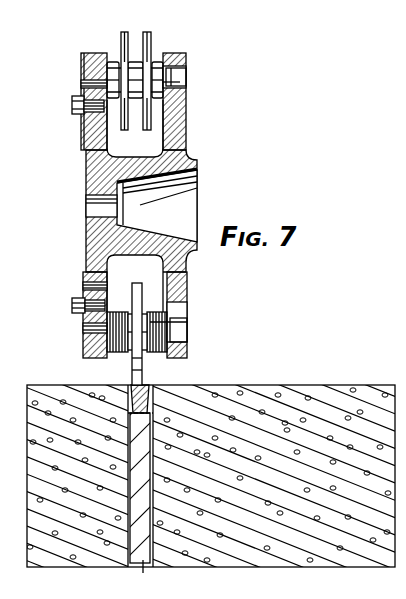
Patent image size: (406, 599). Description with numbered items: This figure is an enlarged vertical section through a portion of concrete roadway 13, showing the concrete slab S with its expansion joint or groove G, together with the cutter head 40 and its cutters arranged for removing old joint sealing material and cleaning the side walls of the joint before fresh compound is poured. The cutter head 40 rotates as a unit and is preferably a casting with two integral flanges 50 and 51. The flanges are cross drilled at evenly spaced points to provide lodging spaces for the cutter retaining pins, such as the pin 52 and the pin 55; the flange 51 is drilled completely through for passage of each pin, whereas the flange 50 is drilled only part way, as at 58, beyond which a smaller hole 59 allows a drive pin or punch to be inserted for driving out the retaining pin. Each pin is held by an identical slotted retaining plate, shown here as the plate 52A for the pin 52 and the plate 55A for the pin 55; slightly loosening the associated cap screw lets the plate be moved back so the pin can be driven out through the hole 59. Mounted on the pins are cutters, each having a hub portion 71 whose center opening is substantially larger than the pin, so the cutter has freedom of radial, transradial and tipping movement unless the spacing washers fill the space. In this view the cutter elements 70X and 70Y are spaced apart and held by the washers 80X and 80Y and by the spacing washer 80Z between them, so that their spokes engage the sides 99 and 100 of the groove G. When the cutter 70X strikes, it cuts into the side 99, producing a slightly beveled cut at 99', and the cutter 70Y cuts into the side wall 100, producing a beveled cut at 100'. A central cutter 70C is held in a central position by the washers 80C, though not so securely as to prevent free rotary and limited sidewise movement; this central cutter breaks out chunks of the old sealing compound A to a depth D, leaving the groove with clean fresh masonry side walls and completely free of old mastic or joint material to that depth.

The concrete base 13 is at (353, 384).
The concrete slab S is at (315, 393).
The side of groove 99 is at (96, 464).
The beveled cut 99' is at (103, 381).
The side of groove 100 is at (168, 463).
The beveled cut 100' is at (178, 382).
The groove G is at (146, 568).
The old sealing compound A is at (154, 412).
The depth D is at (164, 440).
The flange 50 is at (187, 116).
The cutter head 40 is at (189, 139).
The flange 51 is at (85, 148).
The retaining plate 52A is at (81, 68).
The pin 52 is at (180, 73).
The smaller hole 59 is at (182, 82).
The hub portion 71 is at (112, 96).
The washer 80X is at (112, 62).
The spacing washer 80Z is at (138, 110).
The washer 80Y is at (158, 62).
The cutter element 70X is at (124, 32).
The cutter element 70Y is at (148, 32).
The retaining plate 55A is at (85, 282).
The pin 55 is at (95, 328).
The partial drilling 58 is at (178, 323).
The washers 80C is at (110, 312).
The central cutter 70C is at (143, 287).